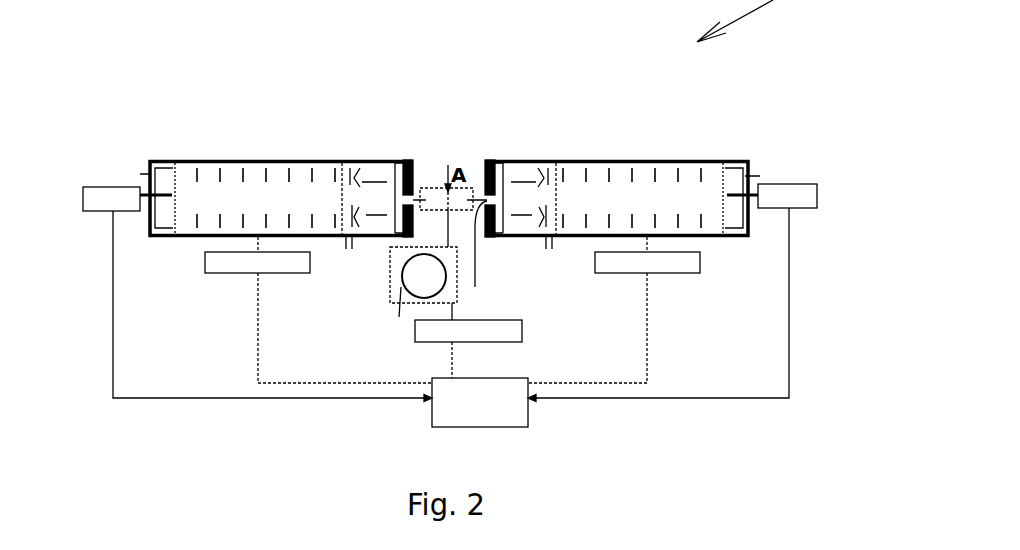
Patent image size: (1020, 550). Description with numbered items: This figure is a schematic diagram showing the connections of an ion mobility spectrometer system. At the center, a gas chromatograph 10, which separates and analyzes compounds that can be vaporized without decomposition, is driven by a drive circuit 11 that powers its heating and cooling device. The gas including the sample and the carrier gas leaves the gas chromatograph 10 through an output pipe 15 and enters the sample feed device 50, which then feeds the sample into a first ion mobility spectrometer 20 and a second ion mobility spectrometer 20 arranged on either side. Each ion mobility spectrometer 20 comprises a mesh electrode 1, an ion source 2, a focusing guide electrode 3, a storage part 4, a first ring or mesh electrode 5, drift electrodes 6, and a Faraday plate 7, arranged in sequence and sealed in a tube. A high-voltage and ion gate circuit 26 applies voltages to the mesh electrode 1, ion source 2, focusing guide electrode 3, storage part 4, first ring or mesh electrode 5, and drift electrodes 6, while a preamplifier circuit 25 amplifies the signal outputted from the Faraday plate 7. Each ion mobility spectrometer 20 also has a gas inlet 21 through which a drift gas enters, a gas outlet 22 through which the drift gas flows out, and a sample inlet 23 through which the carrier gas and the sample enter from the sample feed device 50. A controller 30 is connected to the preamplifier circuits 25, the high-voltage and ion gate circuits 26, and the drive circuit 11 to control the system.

The mesh electrode 1 is at (416, 162).
The ion source 2 is at (373, 182).
The focusing guide electrode 3 is at (357, 168).
The storage part 4 is at (343, 170).
The first ring or mesh electrode 5 is at (333, 170).
The drift electrodes 6 is at (185, 160).
The Faraday plate 7 is at (170, 185).
The gas chromatograph 10 is at (450, 298).
The drive circuit 11 is at (468, 340).
The output pipe 15 is at (447, 243).
The ion mobility spectrometer 20 is at (298, 130).
The gas inlet 21 is at (143, 178).
The gas outlet 22 is at (349, 243).
The sample inlet 23 is at (415, 197).
The preamplifier circuit 25 is at (450, 292).
The high-voltage and ion gate circuit 26 is at (452, 310).
The controller 30 is at (480, 402).
The sample feed device 50 is at (453, 153).